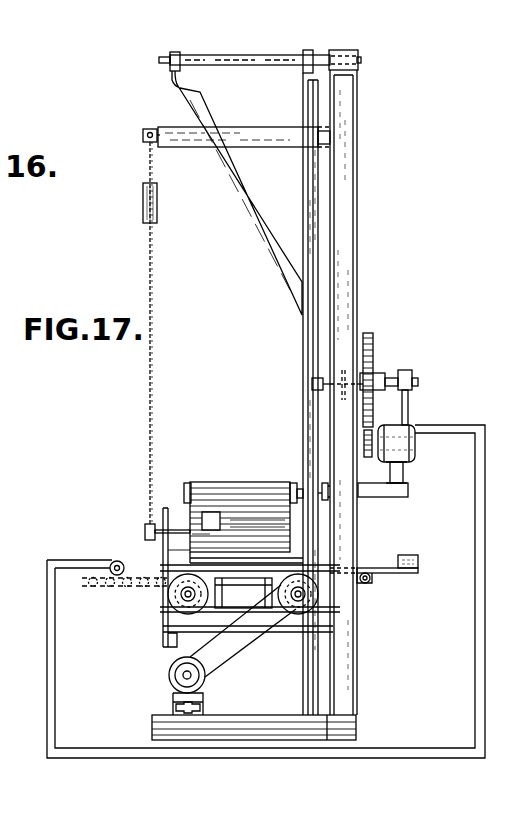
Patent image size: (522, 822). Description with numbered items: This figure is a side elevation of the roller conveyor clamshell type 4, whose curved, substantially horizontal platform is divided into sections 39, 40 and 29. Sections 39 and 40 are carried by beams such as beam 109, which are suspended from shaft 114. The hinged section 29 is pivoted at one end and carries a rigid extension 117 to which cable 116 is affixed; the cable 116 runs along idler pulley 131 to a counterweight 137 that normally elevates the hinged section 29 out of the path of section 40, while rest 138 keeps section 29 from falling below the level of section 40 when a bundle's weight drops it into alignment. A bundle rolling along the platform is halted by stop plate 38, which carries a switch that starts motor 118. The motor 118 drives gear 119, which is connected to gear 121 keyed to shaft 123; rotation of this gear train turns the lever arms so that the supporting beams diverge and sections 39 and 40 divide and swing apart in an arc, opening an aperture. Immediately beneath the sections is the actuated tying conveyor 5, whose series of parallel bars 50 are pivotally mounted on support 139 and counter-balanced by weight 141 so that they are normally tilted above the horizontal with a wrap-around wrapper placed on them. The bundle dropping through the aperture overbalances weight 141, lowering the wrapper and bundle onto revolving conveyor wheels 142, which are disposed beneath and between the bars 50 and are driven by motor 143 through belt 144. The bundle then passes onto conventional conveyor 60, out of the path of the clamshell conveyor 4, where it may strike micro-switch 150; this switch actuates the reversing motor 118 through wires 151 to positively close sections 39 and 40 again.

The roller conveyor clamshell type 4 is at (359, 226).
The tying conveyor 5 is at (158, 609).
The hinged platform section 29 is at (237, 493).
The stop plate 38 is at (202, 513).
The platform section 39 is at (260, 530).
The platform section 40 is at (210, 537).
The parallel bars 50 is at (190, 571).
The conventional conveyor 60 is at (105, 587).
The beam 109 is at (308, 166).
The shaft 114 is at (233, 55).
The cable 116 is at (149, 288).
The extension 117 is at (145, 532).
The motor 118 is at (415, 445).
The gear 119 is at (368, 457).
The gear 121 is at (375, 345).
The shaft 123 is at (311, 384).
The idler pulley 131 is at (143, 133).
The counterweight 137 is at (143, 207).
The rest 138 is at (178, 551).
The support 139 is at (368, 583).
The weight 141 is at (412, 557).
The conveyor wheels 142 is at (180, 612).
The motor 143 is at (169, 678).
The belt 144 is at (243, 651).
The micro-switch 150 is at (111, 562).
The wires 151 is at (52, 645).